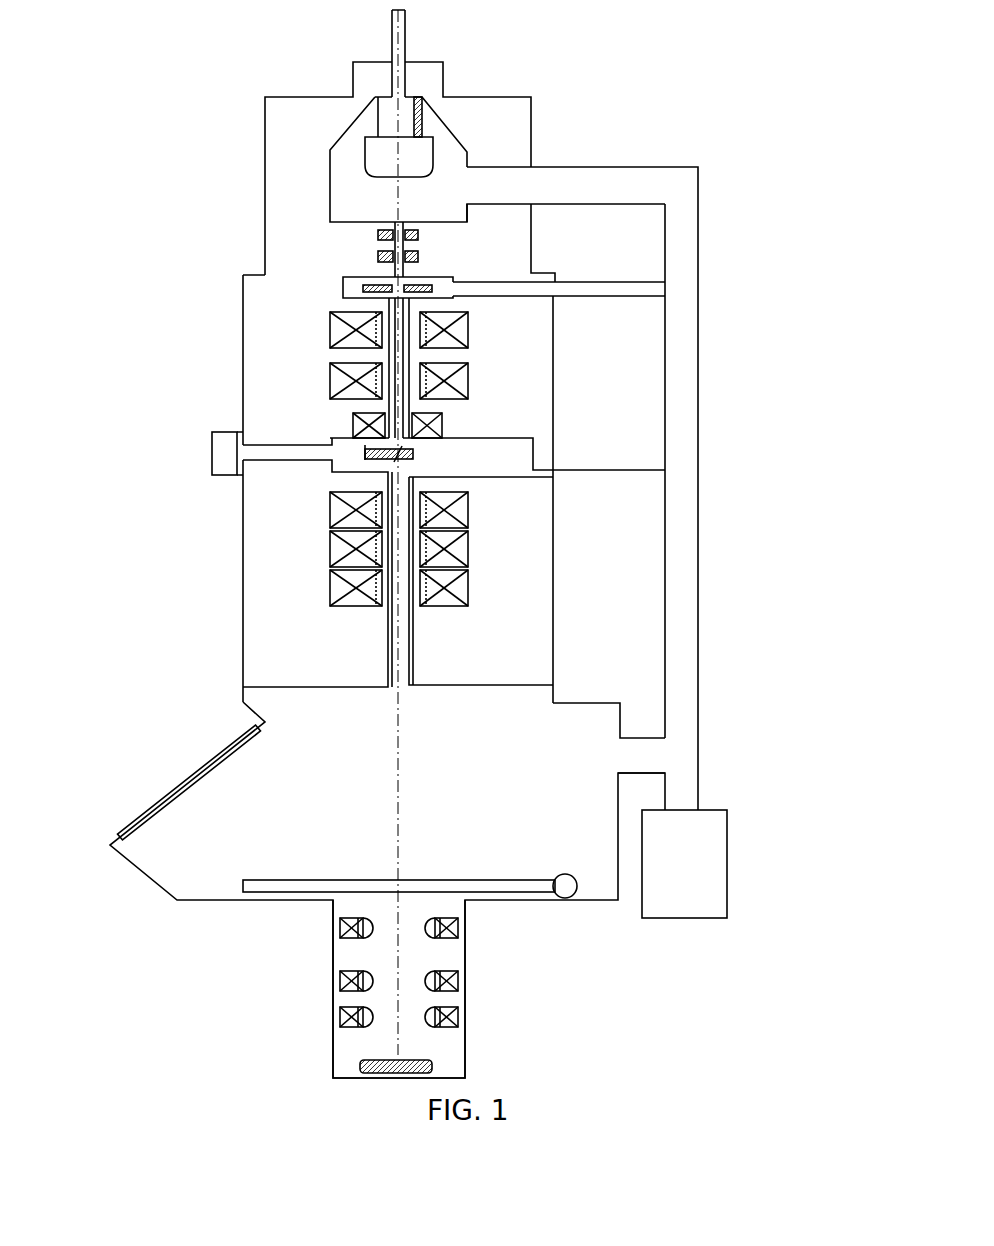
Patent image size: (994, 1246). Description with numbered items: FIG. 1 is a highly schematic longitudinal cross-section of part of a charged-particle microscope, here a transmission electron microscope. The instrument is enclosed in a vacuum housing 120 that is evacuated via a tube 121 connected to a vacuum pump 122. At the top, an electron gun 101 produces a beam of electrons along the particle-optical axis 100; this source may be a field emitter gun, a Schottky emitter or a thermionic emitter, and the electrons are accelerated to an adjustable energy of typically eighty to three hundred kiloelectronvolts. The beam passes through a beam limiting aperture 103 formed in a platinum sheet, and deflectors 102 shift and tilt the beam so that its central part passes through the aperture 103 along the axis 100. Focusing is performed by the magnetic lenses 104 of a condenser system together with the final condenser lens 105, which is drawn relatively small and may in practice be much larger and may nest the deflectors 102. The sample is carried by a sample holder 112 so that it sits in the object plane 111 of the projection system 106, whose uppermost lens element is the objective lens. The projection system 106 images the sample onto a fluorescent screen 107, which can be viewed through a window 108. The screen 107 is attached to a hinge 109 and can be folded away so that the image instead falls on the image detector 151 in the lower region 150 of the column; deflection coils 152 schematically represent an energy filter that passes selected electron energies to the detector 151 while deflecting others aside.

The particle-optical axis 100 is at (398, 198).
The electron gun 101 is at (390, 155).
The deflectors 102 is at (378, 235).
The beam limiting aperture 103 is at (345, 283).
The magnetic lenses 104 is at (330, 323).
The final condenser lens 105 is at (352, 426).
The projection system 106 is at (330, 510).
The fluorescent screen 107 is at (243, 886).
The window 108 is at (207, 760).
The hinge 109 is at (565, 873).
The object plane 111 is at (443, 418).
The sample holder 112 is at (230, 452).
The vacuum housing 120 is at (518, 128).
The tube 121 is at (683, 232).
The vacuum pump 122 is at (750, 873).
The lower housing 150 is at (484, 989).
The image detector 151 is at (360, 1068).
The deflection coils 152 is at (338, 927).